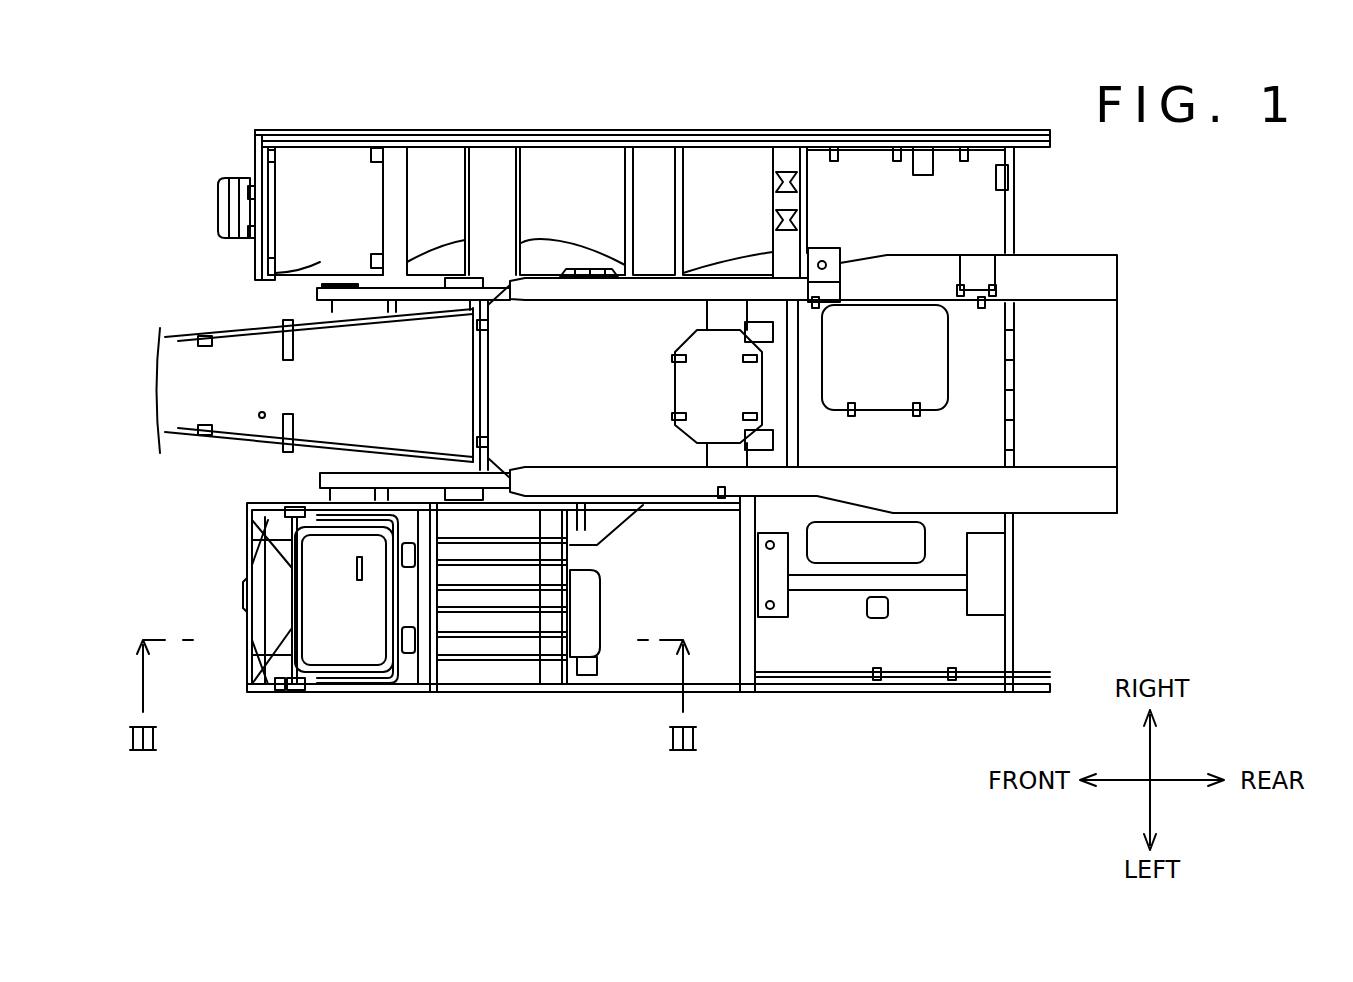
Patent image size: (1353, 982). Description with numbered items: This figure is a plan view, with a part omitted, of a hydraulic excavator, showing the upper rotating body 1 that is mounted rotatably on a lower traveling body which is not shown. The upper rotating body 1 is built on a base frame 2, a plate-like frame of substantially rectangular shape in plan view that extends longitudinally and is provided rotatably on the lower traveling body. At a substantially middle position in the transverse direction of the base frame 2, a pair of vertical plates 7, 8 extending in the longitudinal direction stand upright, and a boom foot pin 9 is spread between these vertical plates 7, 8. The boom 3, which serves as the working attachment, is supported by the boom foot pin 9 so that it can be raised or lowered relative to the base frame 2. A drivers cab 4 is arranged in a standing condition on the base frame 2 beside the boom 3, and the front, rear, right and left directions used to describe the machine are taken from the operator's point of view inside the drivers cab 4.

The upper rotating body 1 is at (174, 154).
The base frame 2 is at (571, 180).
The boom 3 is at (129, 418).
The drivers cab 4 is at (328, 655).
The vertical plate 7 is at (1100, 282).
The vertical plate 8 is at (1100, 494).
The boom foot pin 9 is at (487, 272).